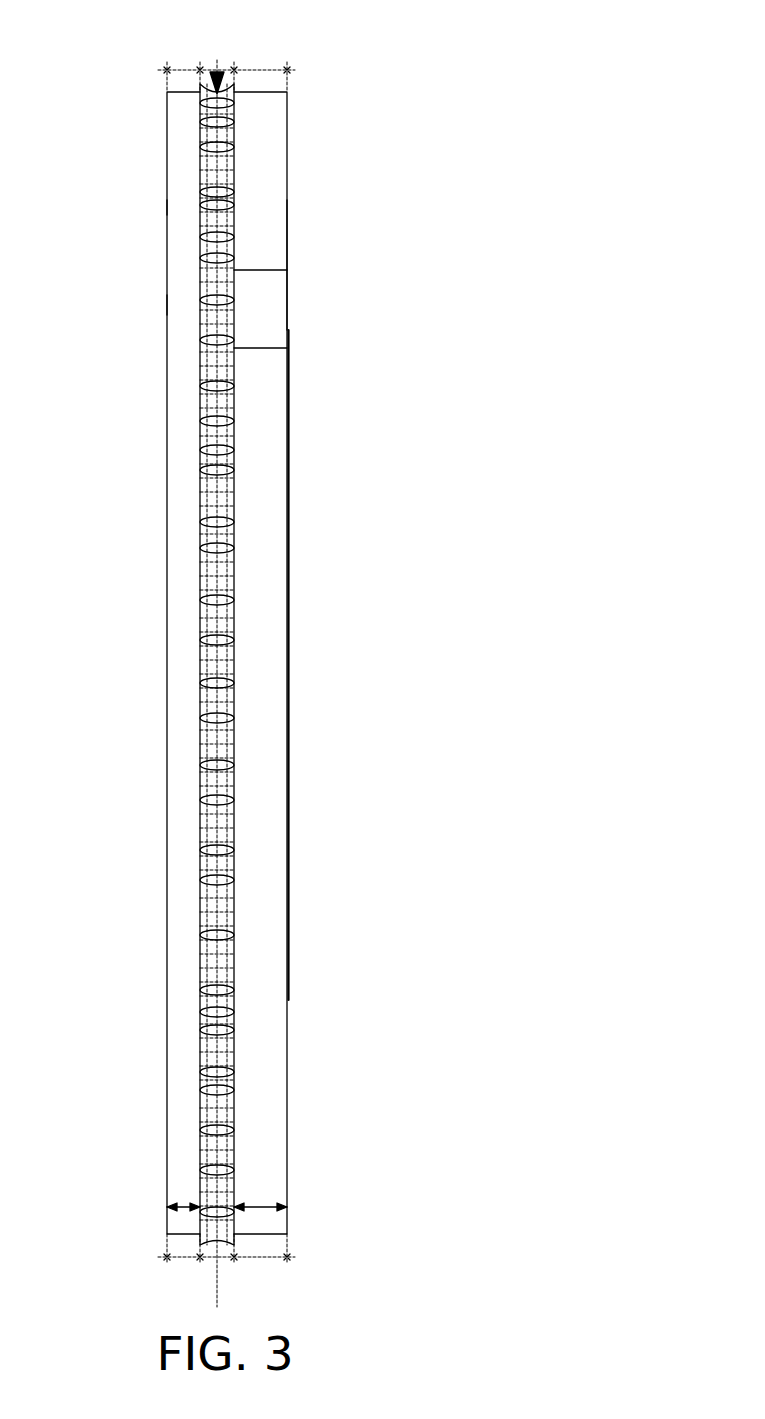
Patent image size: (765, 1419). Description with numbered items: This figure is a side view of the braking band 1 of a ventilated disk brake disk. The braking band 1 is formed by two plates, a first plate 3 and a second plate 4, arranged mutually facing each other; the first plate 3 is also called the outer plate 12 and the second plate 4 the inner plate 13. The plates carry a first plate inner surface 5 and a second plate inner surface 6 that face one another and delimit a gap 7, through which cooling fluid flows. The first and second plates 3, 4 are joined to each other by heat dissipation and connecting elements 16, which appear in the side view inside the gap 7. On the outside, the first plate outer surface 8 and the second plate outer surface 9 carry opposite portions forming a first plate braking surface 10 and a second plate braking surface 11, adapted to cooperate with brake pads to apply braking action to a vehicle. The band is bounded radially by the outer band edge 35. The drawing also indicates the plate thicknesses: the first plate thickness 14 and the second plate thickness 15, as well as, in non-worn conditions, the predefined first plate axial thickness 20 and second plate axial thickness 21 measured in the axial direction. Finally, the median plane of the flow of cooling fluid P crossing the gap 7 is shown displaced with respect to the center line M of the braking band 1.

The braking band 1 is at (385, 97).
The first plate 3 is at (260, 190).
The second plate 4 is at (178, 174).
The first plate inner surface 5 is at (232, 270).
The second plate inner surface 6 is at (205, 208).
The gap 7 is at (217, 72).
The first plate outer surface 8 is at (289, 241).
The second plate outer surface 9 is at (167, 202).
The first plate braking surface 10 is at (291, 340).
The second plate braking surface 11 is at (168, 305).
The outer plate 12 is at (262, 437).
The inner plate 13 is at (187, 390).
The first plate thickness 14 is at (267, 70).
The second plate thickness 15 is at (195, 71).
The heat dissipation and T-pillar connecting element 16 is at (233, 348).
The first plate axial thickness 20 is at (263, 1203).
The second plate axial thickness 21 is at (190, 1205).
The outer band edge 35 is at (268, 1105).
The median plane of the flow of cooling fluid P is at (232, 135).
The braking band center line M is at (217, 1290).